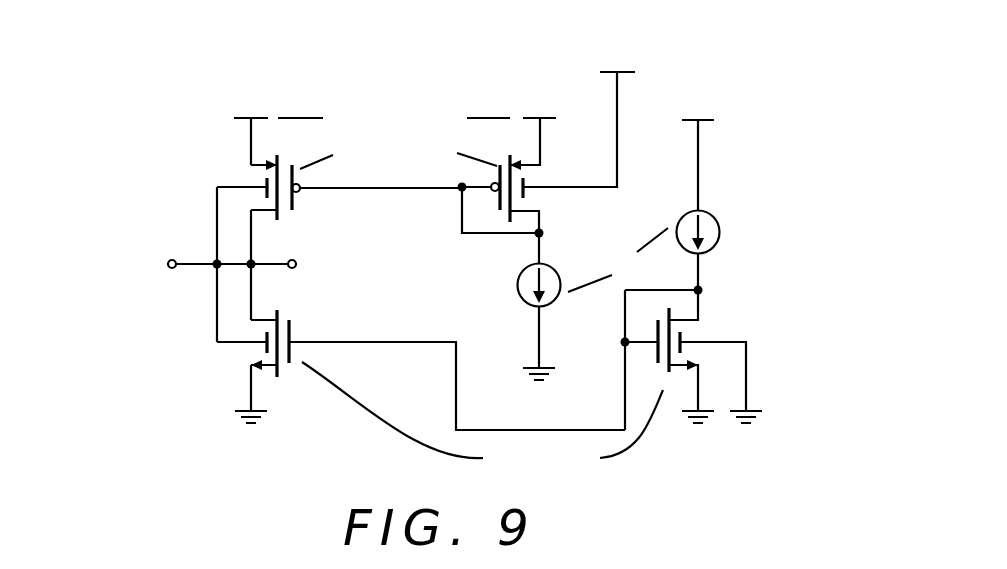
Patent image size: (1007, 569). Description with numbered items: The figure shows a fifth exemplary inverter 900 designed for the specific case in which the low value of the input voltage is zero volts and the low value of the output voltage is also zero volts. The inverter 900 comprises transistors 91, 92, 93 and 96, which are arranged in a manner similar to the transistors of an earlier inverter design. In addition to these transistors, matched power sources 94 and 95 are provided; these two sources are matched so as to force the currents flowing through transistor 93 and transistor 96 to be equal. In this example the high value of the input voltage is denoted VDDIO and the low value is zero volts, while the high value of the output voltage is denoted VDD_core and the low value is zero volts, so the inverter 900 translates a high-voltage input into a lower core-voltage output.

The inverter 900 is at (126, 52).
The transistor 91 is at (307, 207).
The transistor 92 is at (305, 323).
The transistor 93 is at (548, 172).
The matched power source 94 is at (513, 270).
The matched power source 95 is at (727, 218).
The transistor 96 is at (712, 327).